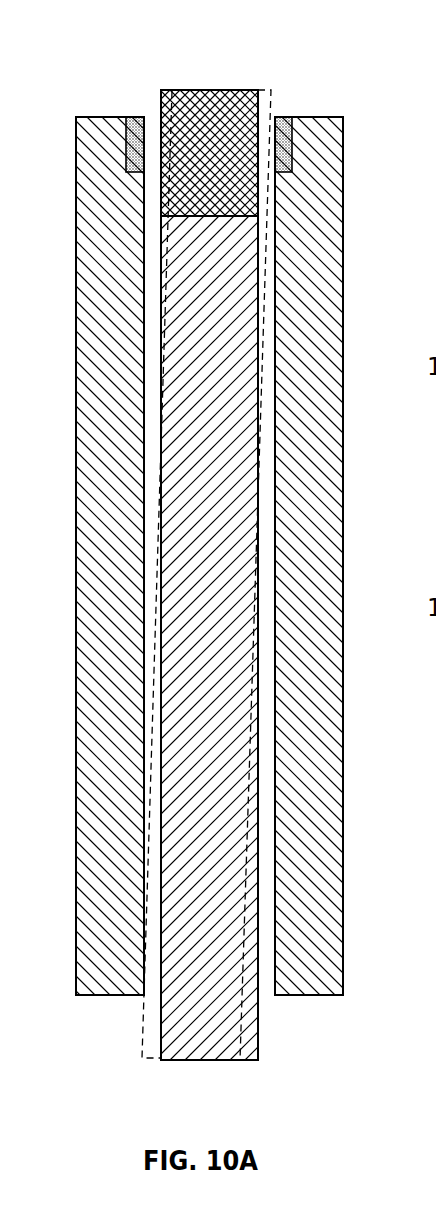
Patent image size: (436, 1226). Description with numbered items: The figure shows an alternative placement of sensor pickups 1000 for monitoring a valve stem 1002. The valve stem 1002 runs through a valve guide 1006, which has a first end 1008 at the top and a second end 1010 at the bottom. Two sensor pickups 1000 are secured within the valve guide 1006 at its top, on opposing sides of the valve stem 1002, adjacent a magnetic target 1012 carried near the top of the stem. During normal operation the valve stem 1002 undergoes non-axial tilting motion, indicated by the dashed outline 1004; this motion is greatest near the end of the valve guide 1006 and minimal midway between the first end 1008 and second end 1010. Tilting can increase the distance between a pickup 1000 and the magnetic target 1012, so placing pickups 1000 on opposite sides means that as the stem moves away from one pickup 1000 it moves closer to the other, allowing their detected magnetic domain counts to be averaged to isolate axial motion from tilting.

The sensor pickup 1000 is at (132, 117).
The valve stem 1002 is at (228, 560).
The outline 1004 is at (268, 92).
The valve guide 1006 is at (323, 322).
The first end 1008 is at (92, 117).
The second end 1010 is at (112, 995).
The magnetic target 1012 is at (222, 100).